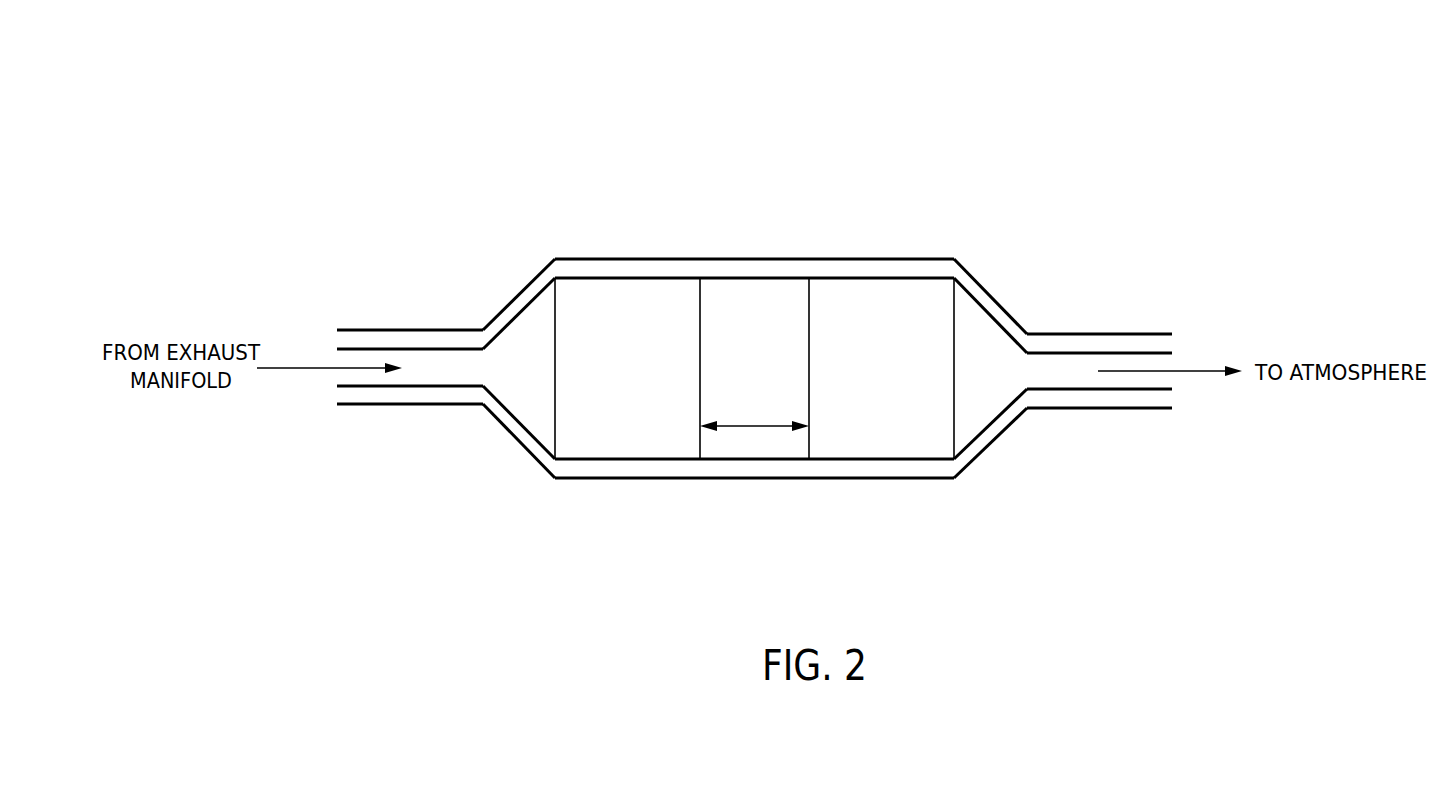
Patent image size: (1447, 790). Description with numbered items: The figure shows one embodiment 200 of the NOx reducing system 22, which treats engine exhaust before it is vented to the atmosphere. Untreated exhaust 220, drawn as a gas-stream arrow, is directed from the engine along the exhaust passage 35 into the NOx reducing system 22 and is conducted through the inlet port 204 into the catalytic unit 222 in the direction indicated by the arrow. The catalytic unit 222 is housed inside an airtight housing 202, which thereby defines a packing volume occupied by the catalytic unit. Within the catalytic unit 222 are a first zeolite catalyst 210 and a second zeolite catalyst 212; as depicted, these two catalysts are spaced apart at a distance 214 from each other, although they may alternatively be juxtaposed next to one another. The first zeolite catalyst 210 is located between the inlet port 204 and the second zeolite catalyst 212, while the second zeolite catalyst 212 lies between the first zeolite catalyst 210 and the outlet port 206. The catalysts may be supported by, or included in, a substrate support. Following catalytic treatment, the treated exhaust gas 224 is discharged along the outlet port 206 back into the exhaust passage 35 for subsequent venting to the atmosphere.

The embodiment of NOx reducing system 200 is at (1181, 105).
The NOx reducing system 22 is at (874, 156).
The exhaust passage 35 is at (363, 330).
The airtight housing 202 is at (642, 480).
The inlet port 204 is at (429, 367).
The outlet port 206 is at (1062, 376).
The first zeolite catalyst 210 is at (627, 298).
The second zeolite catalyst 212 is at (882, 297).
The distance 214 is at (737, 425).
The catalytic unit 222 is at (777, 240).
The untreated exhaust 220 is at (275, 369).
The treated exhaust gas 224 is at (1197, 373).